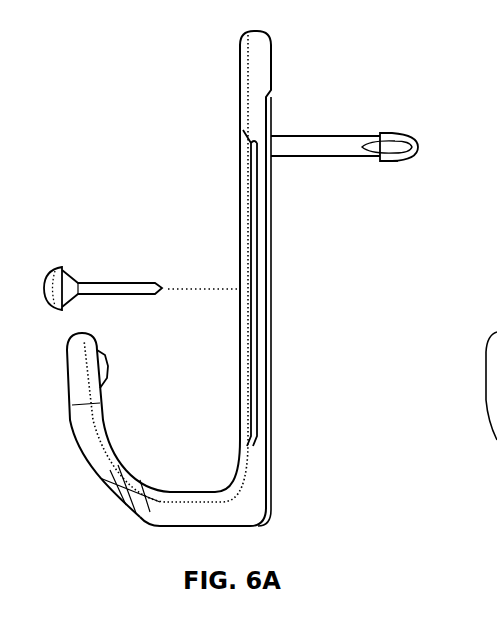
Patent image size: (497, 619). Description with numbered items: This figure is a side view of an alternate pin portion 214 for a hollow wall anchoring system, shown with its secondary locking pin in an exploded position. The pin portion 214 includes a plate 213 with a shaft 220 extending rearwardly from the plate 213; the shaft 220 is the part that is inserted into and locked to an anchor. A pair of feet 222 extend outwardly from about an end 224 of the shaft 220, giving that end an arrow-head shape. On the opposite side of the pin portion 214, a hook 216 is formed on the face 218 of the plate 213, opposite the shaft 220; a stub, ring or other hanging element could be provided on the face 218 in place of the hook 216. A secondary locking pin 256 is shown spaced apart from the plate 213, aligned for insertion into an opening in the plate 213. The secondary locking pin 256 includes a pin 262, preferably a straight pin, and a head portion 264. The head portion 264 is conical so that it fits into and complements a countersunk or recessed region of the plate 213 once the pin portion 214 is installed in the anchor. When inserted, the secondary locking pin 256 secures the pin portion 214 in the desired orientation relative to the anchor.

The pin portion 214 is at (217, 97).
The plate 213 is at (234, 199).
The face 218 is at (238, 237).
The hook 216 is at (80, 443).
The pin 262 is at (130, 295).
The secondary locking pin 256 is at (92, 275).
The head portion 264 is at (55, 268).
The shaft 220 is at (318, 134).
The feet 222 is at (397, 143).
The end of the shaft 224 is at (388, 172).